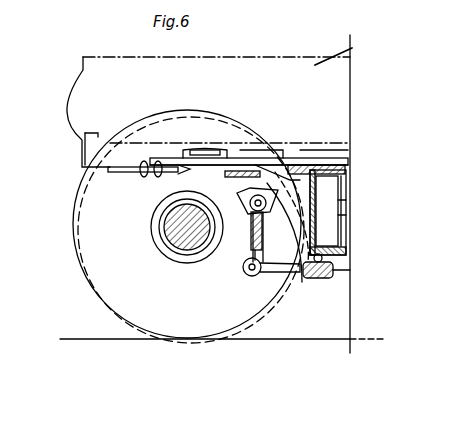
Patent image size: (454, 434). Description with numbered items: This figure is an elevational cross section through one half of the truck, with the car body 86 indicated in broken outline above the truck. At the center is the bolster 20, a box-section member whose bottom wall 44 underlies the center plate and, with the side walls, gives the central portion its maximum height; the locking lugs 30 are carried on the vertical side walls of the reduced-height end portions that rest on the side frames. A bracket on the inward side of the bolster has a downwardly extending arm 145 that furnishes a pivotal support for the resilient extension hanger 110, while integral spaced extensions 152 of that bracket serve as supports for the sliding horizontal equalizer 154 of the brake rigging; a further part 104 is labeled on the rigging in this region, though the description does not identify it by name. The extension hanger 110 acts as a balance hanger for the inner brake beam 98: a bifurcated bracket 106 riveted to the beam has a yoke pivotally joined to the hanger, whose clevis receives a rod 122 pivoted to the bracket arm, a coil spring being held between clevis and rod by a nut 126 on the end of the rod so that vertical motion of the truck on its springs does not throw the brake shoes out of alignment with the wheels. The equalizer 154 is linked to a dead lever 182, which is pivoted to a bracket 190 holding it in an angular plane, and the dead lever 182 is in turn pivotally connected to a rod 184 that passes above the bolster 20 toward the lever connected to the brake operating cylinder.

The car body 86 is at (130, 60).
The bracket 190 is at (176, 156).
The sliding horizontal equalizer 154 is at (240, 150).
The integral spaced extensions 152 is at (278, 150).
The mounting plate 104 is at (305, 157).
The rod 184 is at (328, 146).
The locking lugs 30 is at (350, 149).
The bolster 20 is at (318, 200).
The dead lever 182 is at (176, 176).
The rod 122 is at (248, 200).
The downwardly extending arm 145 is at (275, 237).
The nut 126 is at (247, 244).
The resilient extension hanger 110 is at (243, 270).
The bracket 106 is at (298, 275).
The inner brake beam 98 is at (350, 271).
The bottom wall 44 is at (330, 268).